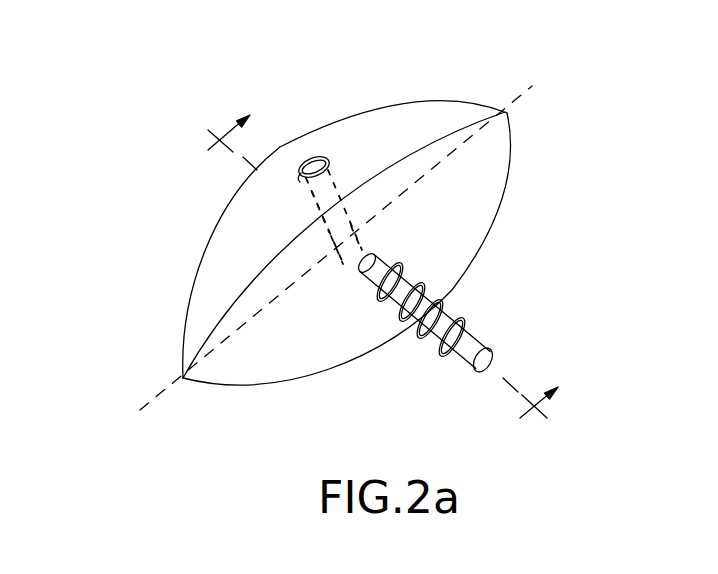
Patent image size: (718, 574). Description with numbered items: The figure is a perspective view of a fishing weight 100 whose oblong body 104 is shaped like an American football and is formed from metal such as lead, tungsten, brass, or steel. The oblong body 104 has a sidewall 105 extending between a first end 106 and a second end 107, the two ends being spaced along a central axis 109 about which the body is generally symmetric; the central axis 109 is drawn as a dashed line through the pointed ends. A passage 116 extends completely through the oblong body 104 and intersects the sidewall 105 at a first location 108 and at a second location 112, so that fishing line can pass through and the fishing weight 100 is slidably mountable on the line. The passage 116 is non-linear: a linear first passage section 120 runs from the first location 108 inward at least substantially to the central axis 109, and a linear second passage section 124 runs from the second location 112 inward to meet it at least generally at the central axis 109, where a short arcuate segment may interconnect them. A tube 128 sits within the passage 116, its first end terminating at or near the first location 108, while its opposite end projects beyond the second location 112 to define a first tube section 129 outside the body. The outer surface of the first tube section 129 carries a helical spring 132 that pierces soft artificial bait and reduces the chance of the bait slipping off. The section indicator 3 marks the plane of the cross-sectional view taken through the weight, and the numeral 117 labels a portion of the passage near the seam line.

The fishing weight 100 is at (624, 80).
The oblong body 104 is at (426, 92).
The sidewall 105 is at (486, 152).
The first end 106 is at (507, 113).
The second end 107 is at (183, 378).
The first location 108 is at (304, 158).
The central axis 109 is at (541, 76).
The second location 112 is at (361, 272).
The passage 116 is at (382, 212).
The first strap portion 117 is at (315, 243).
The first passage section 120 is at (313, 188).
The second passage section 124 is at (344, 263).
The tube 128 is at (318, 158).
The first tube section 129 is at (445, 306).
The spring 132 is at (479, 333).
The section line 3- 3 is at (381, 268).